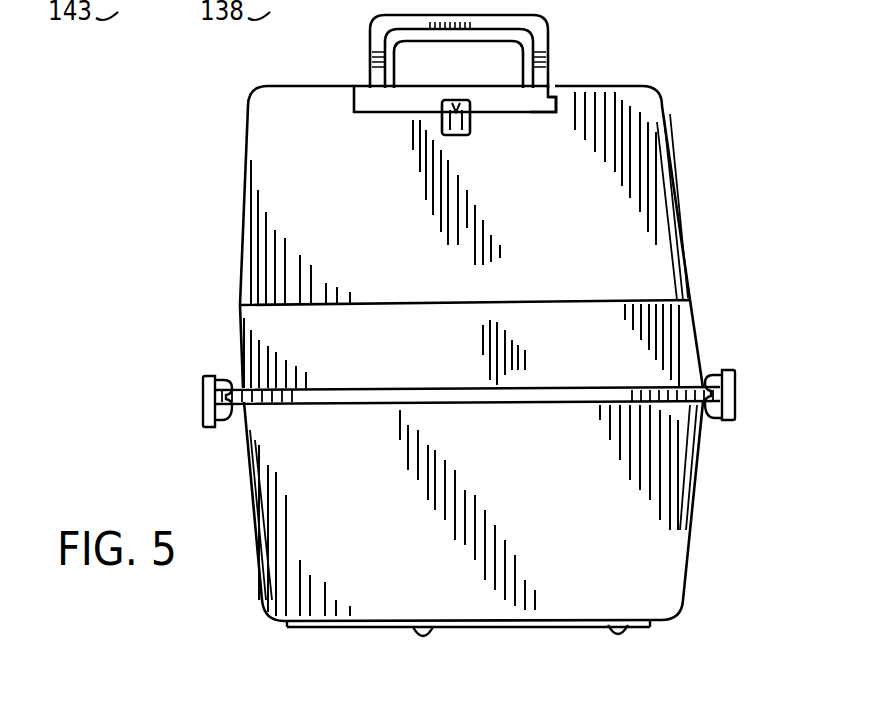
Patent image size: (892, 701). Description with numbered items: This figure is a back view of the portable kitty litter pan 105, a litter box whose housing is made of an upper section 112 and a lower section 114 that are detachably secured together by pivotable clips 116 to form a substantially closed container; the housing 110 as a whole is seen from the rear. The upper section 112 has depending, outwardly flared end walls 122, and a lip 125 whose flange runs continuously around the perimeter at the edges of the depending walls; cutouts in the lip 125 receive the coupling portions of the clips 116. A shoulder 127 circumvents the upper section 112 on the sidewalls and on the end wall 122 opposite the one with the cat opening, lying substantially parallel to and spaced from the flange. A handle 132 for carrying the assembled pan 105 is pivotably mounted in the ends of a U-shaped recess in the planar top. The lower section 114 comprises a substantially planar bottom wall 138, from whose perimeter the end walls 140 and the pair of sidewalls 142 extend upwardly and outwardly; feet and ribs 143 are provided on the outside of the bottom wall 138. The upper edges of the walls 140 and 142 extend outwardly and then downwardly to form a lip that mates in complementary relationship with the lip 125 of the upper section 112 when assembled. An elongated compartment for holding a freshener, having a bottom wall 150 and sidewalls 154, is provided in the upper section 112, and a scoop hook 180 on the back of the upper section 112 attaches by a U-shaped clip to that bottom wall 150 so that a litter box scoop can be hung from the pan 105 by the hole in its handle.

The portable kitty litter pan 105 is at (212, 242).
The upper body section 110 is at (696, 210).
The upper section 112 is at (681, 124).
The lower section 114 is at (699, 468).
The pivotable clips 116 is at (210, 372).
The end walls 122 is at (592, 224).
The lip 125 is at (737, 397).
The shoulder 127 is at (692, 298).
The handle 132 is at (549, 35).
The bottom wall 138 is at (620, 588).
The end walls 140 is at (592, 526).
The sidewalls 142 is at (243, 464).
The feet and ribs 143 is at (431, 630).
The bottom wall of compartment 150 is at (527, 108).
The sidewalls of compartment 154 is at (553, 90).
The scoop hook 180 is at (458, 103).